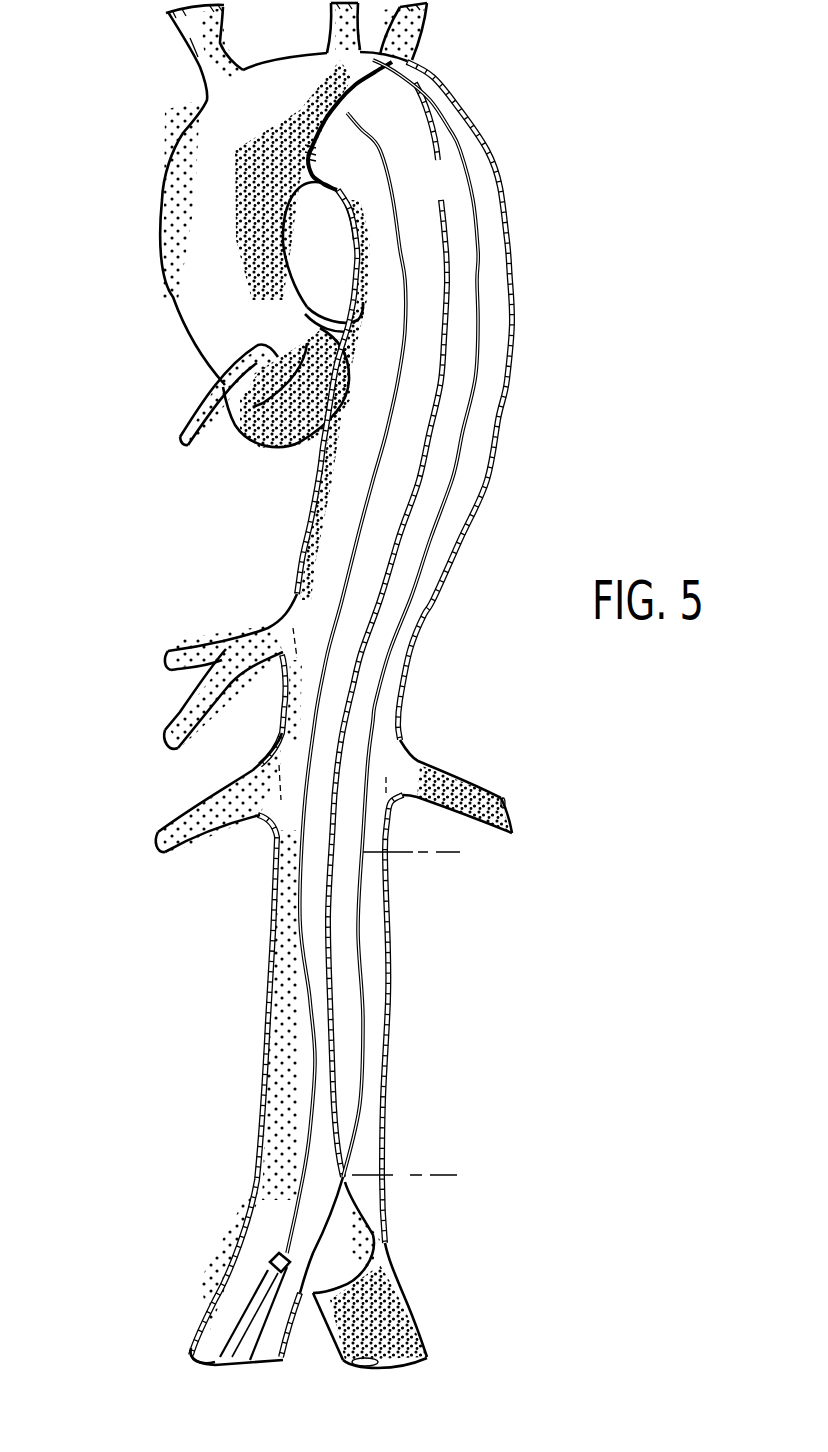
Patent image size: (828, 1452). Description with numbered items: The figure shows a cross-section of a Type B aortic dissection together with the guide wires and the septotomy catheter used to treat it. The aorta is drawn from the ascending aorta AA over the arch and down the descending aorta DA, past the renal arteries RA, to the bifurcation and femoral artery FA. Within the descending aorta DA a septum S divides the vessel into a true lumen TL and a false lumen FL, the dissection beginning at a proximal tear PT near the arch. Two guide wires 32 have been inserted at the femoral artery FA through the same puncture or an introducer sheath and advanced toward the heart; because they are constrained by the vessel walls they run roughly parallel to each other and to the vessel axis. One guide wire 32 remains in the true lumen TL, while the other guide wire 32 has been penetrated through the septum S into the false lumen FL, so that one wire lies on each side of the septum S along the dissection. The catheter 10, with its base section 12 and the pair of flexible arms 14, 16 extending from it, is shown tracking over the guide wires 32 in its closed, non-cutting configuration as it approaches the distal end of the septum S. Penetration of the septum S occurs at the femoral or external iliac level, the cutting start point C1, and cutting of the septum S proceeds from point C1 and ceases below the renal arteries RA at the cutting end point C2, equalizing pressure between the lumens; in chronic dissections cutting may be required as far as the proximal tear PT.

The ascending aorta AA is at (152, 263).
The descending aorta DA is at (522, 265).
The proximal tear PT is at (448, 172).
The true lumen TL is at (347, 463).
The false lumen FL is at (365, 876).
The septum S is at (332, 953).
The guide wires 32 is at (483, 400).
The renal arteries RA is at (164, 797).
The femoral artery FA is at (113, 1293).
The cutting start point C1 is at (418, 1177).
The cutting end point C2 is at (426, 852).
The septotomy catheter 10 is at (241, 1291).
The base section 12 is at (243, 1340).
The flexible arm 14 is at (266, 1270).
The flexible arm 16 is at (308, 1292).